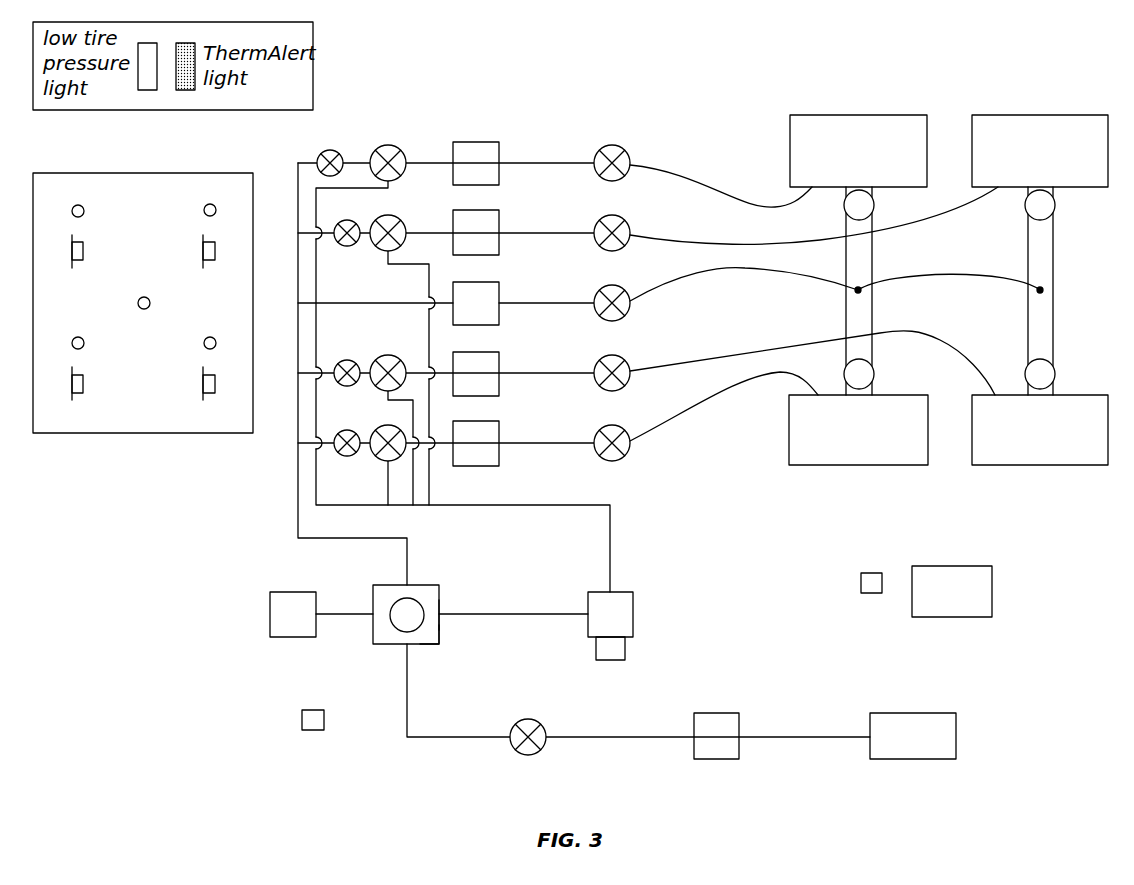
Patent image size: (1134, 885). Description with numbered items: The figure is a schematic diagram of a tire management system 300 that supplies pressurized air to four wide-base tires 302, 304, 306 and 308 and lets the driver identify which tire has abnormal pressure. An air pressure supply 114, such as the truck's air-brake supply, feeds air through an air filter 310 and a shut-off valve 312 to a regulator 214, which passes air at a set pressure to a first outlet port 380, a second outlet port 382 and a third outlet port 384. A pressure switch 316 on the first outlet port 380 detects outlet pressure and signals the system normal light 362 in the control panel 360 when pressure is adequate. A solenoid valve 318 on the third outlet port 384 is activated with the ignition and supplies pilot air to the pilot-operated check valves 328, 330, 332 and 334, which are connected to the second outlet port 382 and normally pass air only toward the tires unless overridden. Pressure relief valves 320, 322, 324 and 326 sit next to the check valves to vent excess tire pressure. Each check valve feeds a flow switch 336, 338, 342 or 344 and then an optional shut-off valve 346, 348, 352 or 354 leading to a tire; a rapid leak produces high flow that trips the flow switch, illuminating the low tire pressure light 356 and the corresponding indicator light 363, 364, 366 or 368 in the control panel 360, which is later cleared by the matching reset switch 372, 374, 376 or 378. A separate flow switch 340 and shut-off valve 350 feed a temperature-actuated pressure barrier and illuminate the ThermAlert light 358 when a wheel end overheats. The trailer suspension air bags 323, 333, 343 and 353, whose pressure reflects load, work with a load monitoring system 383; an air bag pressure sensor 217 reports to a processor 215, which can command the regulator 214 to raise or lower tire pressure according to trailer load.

The tire management system 300 is at (108, 684).
The wide-base tire 302 is at (877, 165).
The wide-base tire 304 is at (1058, 165).
The wide-base tire 306 is at (877, 444).
The wide-base tire 308 is at (1058, 444).
The air filter 310 is at (712, 759).
The shut-off valve 312 is at (530, 755).
The pressure switch 316 is at (270, 614).
The solenoid valve 318 is at (633, 615).
The pressure relief valve 320 is at (330, 150).
The pressure relief valve 322 is at (347, 220).
The air bag 323 is at (844, 207).
The pressure relief valve 324 is at (345, 360).
The pressure relief valve 326 is at (348, 456).
The pilot-operated check valve 328 is at (388, 145).
The pilot-operated check valve 330 is at (390, 215).
The pilot-operated check valve 332 is at (390, 356).
The air bag 333 is at (844, 374).
The pilot-operated check valve 334 is at (392, 426).
The flow switch 336 is at (494, 142).
The flow switch 338 is at (494, 210).
The flow switch 340 is at (494, 282).
The flow switch 342 is at (494, 352).
The air bag 343 is at (1055, 208).
The flow switch 344 is at (494, 421).
The shut-off valve 346 is at (612, 145).
The shut-off valve 348 is at (612, 215).
The shut-off valve 350 is at (612, 285).
The shut-off valve 352 is at (612, 355).
The air bag 353 is at (1055, 378).
The shut-off valve 354 is at (612, 425).
The low tire pressure indicator light 356 is at (147, 90).
The ThermAlert indicator light 358 is at (186, 90).
The control panel 360 is at (145, 433).
The system normal light 362 is at (167, 290).
The indicator light 363 is at (102, 198).
The indicator light 364 is at (204, 207).
The indicator light 366 is at (102, 329).
The indicator light 368 is at (204, 340).
The reset switch 372 is at (102, 239).
The reset switch 374 is at (203, 250).
The reset switch 376 is at (102, 371).
The reset switch 378 is at (203, 382).
The first outlet port 380 is at (373, 615).
The second outlet port 382 is at (408, 585).
The third outlet port 384 is at (439, 614).
The load monitoring system 383 is at (985, 566).
The regulator 214 is at (427, 645).
The processor 215 is at (302, 715).
The air bag pressure sensor 217 is at (861, 578).
The air pressure supply 114 is at (932, 749).